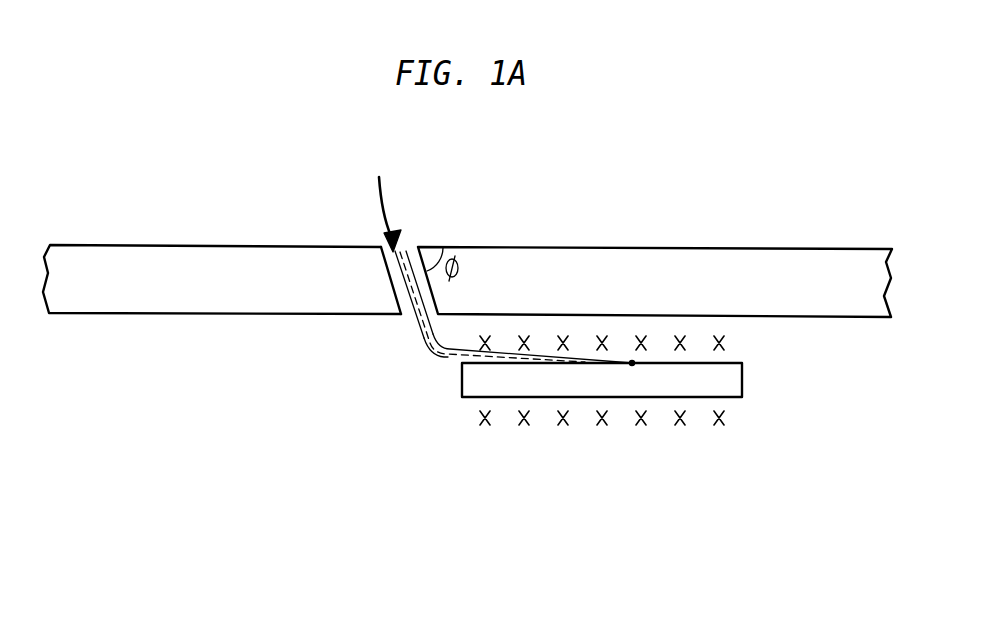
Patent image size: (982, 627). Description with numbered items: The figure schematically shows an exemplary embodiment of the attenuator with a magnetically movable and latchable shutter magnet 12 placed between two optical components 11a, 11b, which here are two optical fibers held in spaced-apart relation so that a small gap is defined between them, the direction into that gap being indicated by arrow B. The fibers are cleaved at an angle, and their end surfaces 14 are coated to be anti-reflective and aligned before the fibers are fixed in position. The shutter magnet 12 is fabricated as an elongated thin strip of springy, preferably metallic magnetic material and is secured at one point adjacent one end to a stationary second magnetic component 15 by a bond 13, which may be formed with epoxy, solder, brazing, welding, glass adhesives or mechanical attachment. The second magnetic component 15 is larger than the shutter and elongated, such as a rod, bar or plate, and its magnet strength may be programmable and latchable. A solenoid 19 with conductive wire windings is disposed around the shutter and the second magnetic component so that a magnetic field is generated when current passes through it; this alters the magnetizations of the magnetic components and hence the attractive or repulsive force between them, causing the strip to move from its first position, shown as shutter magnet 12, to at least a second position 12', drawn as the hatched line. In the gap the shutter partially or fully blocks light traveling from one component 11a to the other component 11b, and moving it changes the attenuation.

The optical component 11a is at (743, 280).
The optical component 11b is at (156, 272).
The shutter magnet 12 is at (432, 247).
The second position of shutter 12' is at (468, 345).
The bond 13 is at (632, 363).
The end surface 14 is at (390, 273).
The second magnetic component 15 is at (572, 397).
The solenoid 19 is at (523, 428).
The viewing direction arrow B is at (384, 201).